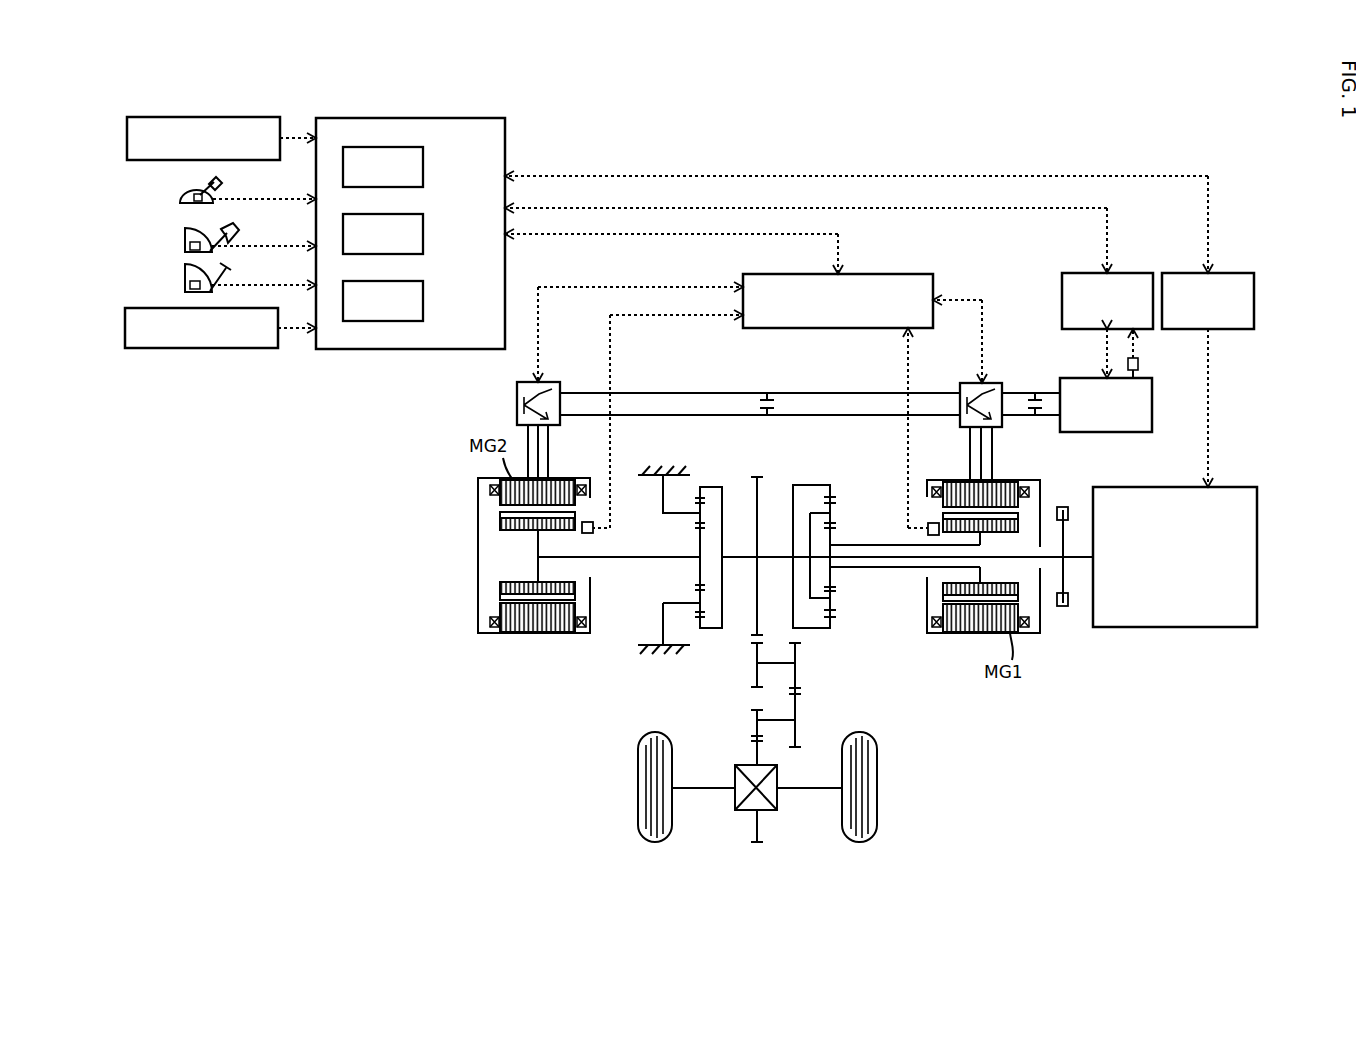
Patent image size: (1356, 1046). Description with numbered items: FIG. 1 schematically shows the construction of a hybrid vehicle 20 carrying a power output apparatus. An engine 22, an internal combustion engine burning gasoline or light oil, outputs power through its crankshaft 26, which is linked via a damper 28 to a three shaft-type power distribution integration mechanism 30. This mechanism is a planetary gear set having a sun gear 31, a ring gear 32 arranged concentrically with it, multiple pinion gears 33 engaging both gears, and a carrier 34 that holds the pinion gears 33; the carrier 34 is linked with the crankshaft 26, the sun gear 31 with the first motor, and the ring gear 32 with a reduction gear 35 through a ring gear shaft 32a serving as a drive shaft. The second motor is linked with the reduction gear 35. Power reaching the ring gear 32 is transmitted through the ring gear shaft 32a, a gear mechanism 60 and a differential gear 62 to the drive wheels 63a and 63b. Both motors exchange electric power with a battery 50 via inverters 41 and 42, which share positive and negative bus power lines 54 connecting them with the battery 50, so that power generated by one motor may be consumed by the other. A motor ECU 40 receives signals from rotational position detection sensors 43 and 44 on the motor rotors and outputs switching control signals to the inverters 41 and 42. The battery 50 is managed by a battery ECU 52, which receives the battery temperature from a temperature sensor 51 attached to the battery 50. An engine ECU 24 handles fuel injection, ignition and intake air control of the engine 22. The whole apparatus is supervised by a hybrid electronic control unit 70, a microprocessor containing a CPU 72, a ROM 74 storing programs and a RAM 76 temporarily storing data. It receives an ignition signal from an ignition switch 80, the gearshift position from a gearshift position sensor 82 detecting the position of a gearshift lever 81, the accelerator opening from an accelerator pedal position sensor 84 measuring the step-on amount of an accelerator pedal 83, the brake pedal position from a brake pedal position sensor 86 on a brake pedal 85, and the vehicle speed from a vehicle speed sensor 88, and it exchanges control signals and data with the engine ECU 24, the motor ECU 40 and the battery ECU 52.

The hybrid vehicle 20 is at (1012, 148).
The engine 22 is at (1257, 497).
The engine electronic control unit 24 is at (1230, 273).
The crankshaft 26 is at (1077, 562).
The damper 28 is at (1065, 608).
The power distribution integration mechanism 30 is at (943, 542).
The sun gear 31 is at (837, 572).
The ring gear 32 is at (837, 625).
The ring gear shaft 32a is at (740, 553).
The pinion gears 33 is at (837, 598).
The carrier 34 is at (805, 523).
The reduction gear 35 is at (701, 467).
The motor electronic control unit 40 is at (876, 274).
The inverter 41 is at (976, 383).
The inverter 42 is at (546, 382).
The rotational position detection sensor 43 is at (928, 523).
The rotational position detection sensor 44 is at (590, 522).
The battery 50 is at (1106, 433).
The temperature sensor 51 is at (1140, 362).
The battery electronic control unit 52 is at (1082, 273).
The power lines 54 is at (820, 393).
The gear mechanism 60 is at (836, 703).
The differential gear 62 is at (778, 800).
The drive wheel 63a is at (638, 822).
The drive wheel 63b is at (877, 822).
The hybrid electronic control unit 70 is at (415, 118).
The CPU 72 is at (423, 166).
The ROM 74 is at (423, 236).
The RAM 76 is at (423, 303).
The ignition switch 80 is at (127, 131).
The gearshift lever 81 is at (210, 182).
The gearshift position sensor 82 is at (195, 197).
The accelerator pedal 83 is at (206, 238).
The accelerator pedal position sensor 84 is at (190, 246).
The brake pedal 85 is at (206, 280).
The brake pedal position sensor 86 is at (190, 285).
The vehicle speed sensor 88 is at (125, 330).